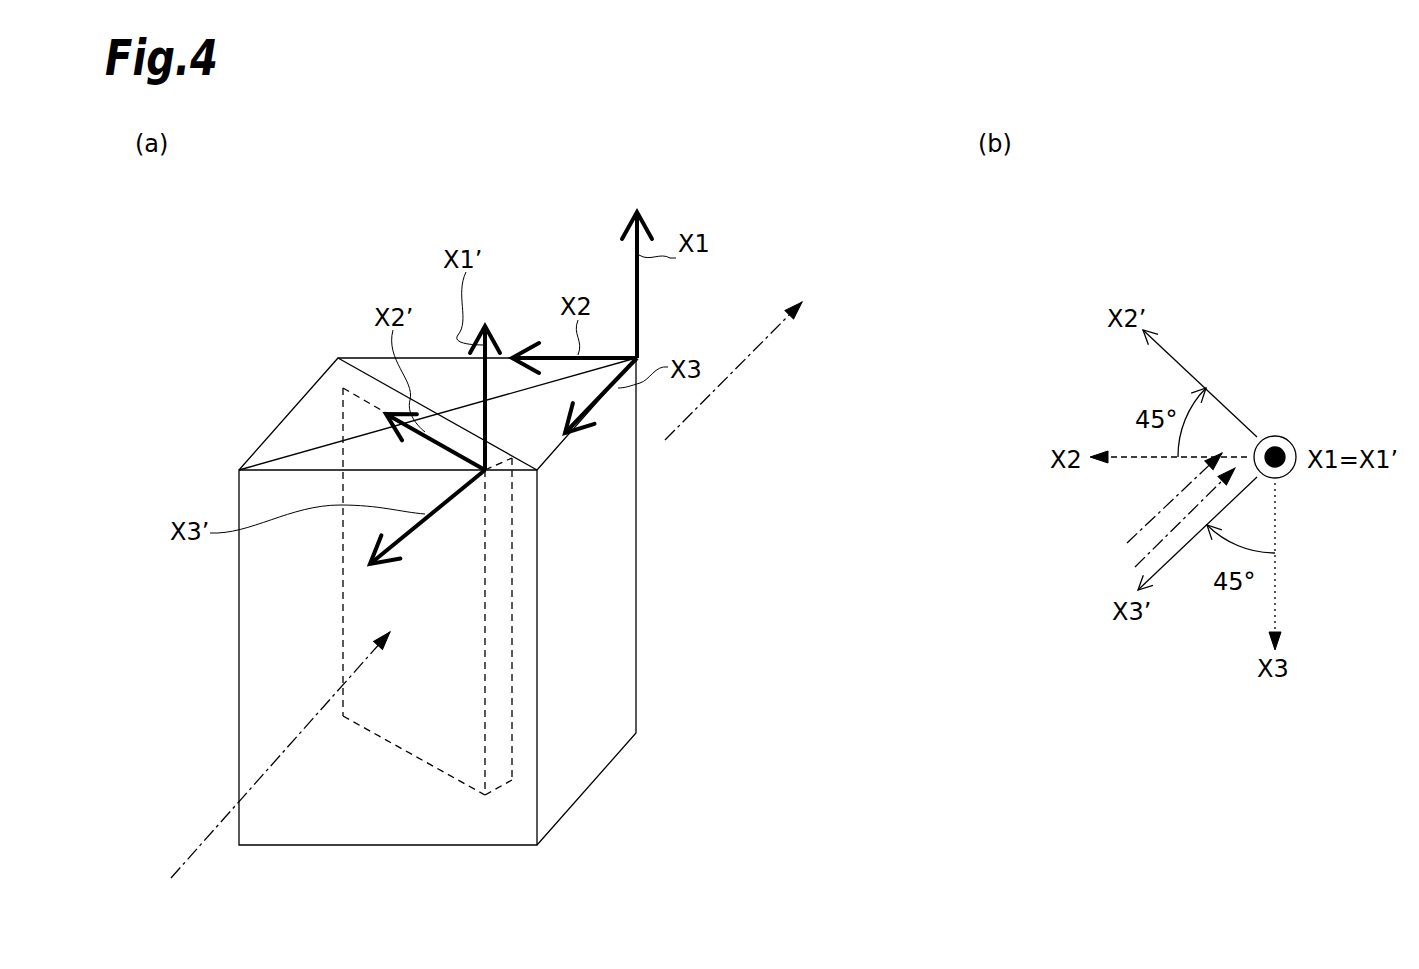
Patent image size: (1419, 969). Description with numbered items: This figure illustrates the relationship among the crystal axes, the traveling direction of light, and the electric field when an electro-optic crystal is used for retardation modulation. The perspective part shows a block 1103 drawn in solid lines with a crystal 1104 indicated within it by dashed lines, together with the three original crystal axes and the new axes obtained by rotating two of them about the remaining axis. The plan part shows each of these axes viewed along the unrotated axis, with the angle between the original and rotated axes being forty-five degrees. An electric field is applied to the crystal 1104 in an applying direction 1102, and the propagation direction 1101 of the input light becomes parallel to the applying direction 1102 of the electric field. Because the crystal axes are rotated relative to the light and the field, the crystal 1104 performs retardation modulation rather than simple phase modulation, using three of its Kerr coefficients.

The propagation direction 1101 is at (192, 868).
The applying direction 1102 is at (753, 357).
The crystal block 1103 is at (636, 628).
The crystal 1104 is at (363, 590).